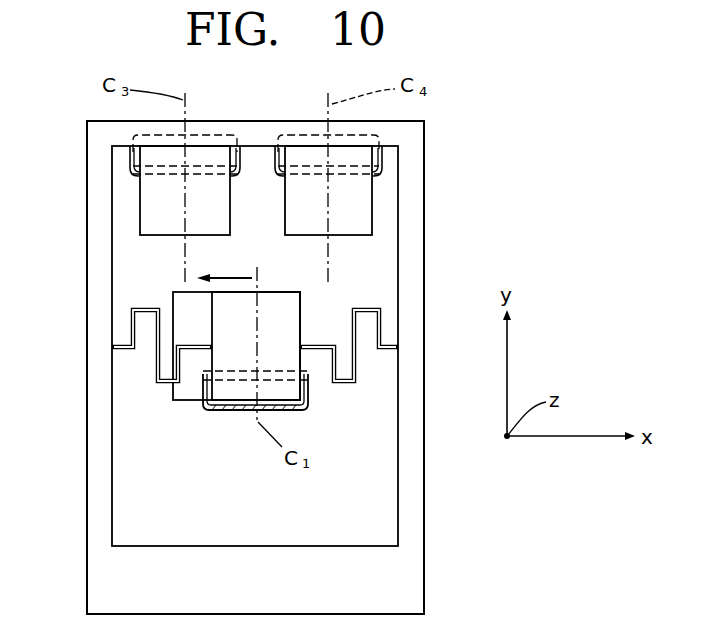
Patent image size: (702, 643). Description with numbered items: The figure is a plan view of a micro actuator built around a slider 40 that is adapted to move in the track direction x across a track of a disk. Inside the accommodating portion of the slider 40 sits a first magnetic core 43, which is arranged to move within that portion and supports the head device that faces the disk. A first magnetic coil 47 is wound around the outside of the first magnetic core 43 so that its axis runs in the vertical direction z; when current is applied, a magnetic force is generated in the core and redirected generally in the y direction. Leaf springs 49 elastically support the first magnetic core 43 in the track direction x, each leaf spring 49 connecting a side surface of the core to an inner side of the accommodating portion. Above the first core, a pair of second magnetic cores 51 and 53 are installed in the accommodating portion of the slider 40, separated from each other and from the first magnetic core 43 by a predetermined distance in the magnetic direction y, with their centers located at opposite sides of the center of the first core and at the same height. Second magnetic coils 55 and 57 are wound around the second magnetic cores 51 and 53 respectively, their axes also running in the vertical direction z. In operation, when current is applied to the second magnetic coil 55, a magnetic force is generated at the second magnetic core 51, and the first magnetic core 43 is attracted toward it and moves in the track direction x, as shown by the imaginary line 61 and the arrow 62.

The slider 40 is at (420, 546).
The first magnetic core 43 is at (302, 307).
The first magnetic coil 47 is at (205, 412).
The leaf spring 49 is at (120, 348).
The second magnetic core 51 is at (140, 220).
The second magnetic core 53 is at (372, 222).
The second magnetic coil 55 is at (132, 152).
The second magnetic coil 57 is at (385, 157).
The imaginary line 61 is at (173, 294).
The arrow 62 is at (233, 272).